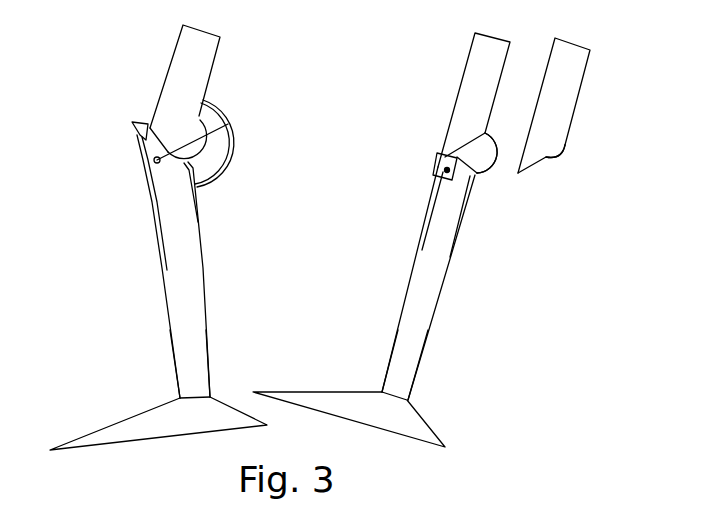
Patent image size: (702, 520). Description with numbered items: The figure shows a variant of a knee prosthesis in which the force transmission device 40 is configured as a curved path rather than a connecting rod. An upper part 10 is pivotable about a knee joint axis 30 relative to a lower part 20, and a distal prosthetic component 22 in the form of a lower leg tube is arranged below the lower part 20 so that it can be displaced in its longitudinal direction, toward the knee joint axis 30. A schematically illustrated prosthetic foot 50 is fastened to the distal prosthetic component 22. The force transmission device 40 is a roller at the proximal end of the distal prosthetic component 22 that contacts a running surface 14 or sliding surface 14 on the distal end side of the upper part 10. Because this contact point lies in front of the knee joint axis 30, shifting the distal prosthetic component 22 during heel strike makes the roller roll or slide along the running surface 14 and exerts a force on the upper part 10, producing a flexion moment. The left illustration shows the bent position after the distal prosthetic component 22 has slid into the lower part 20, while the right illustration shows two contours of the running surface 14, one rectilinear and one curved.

The upper part 10 is at (210, 77).
The running surface 14 is at (546, 158).
The lower part 20 is at (200, 227).
The distal prosthetic component 22 is at (207, 315).
The knee joint axis 30 is at (228, 124).
The force transmission device 40 is at (150, 158).
The prosthetic foot 50 is at (118, 422).